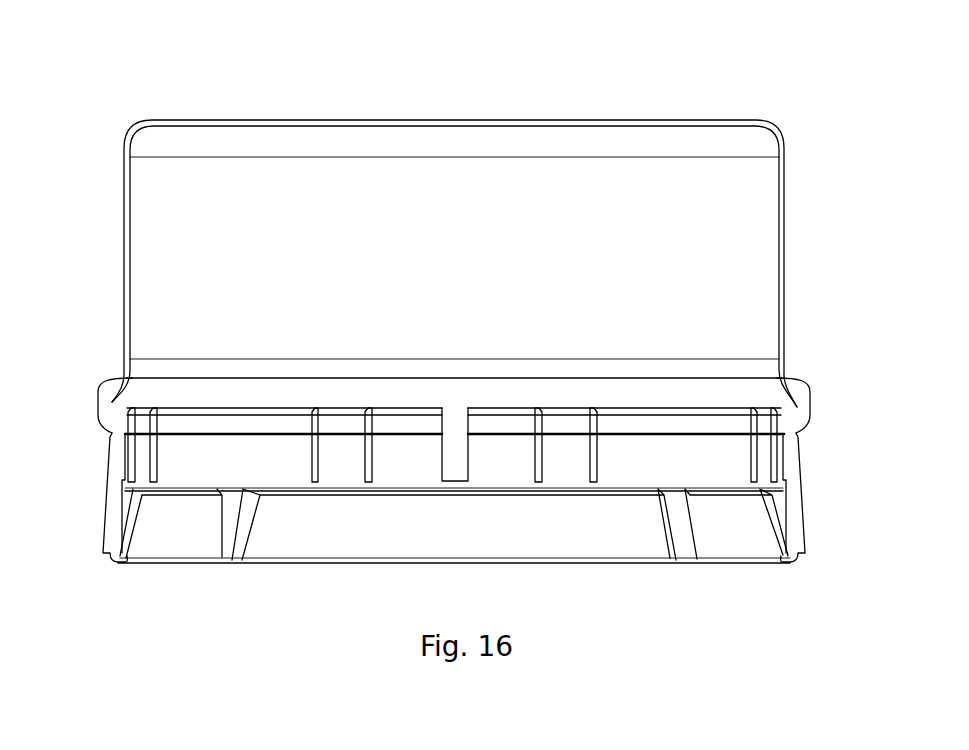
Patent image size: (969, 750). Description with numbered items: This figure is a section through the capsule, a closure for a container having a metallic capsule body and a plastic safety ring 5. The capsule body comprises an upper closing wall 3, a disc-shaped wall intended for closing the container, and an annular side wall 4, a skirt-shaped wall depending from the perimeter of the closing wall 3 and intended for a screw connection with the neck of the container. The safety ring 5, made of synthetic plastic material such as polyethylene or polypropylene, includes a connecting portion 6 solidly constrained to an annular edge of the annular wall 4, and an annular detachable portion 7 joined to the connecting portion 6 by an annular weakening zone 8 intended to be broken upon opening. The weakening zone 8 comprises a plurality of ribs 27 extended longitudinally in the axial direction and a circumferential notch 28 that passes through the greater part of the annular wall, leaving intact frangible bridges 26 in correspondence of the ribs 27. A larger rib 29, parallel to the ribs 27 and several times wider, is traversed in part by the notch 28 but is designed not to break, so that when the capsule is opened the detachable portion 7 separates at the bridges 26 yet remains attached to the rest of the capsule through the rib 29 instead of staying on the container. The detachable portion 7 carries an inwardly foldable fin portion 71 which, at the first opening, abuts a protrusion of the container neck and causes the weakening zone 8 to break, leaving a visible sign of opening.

The upper closing wall 3 is at (512, 120).
The annular side wall 4 is at (781, 247).
The safety ring 5 is at (110, 497).
The connecting portion 6 is at (803, 385).
The annular detachable portion 7 is at (797, 523).
The annular weakening zone 8 is at (695, 434).
The frangible bridges 26 is at (132, 436).
The ribs 27 is at (593, 465).
The circumferential notch 28 is at (215, 434).
The rib 29 is at (460, 455).
The fin portion 71 is at (183, 528).